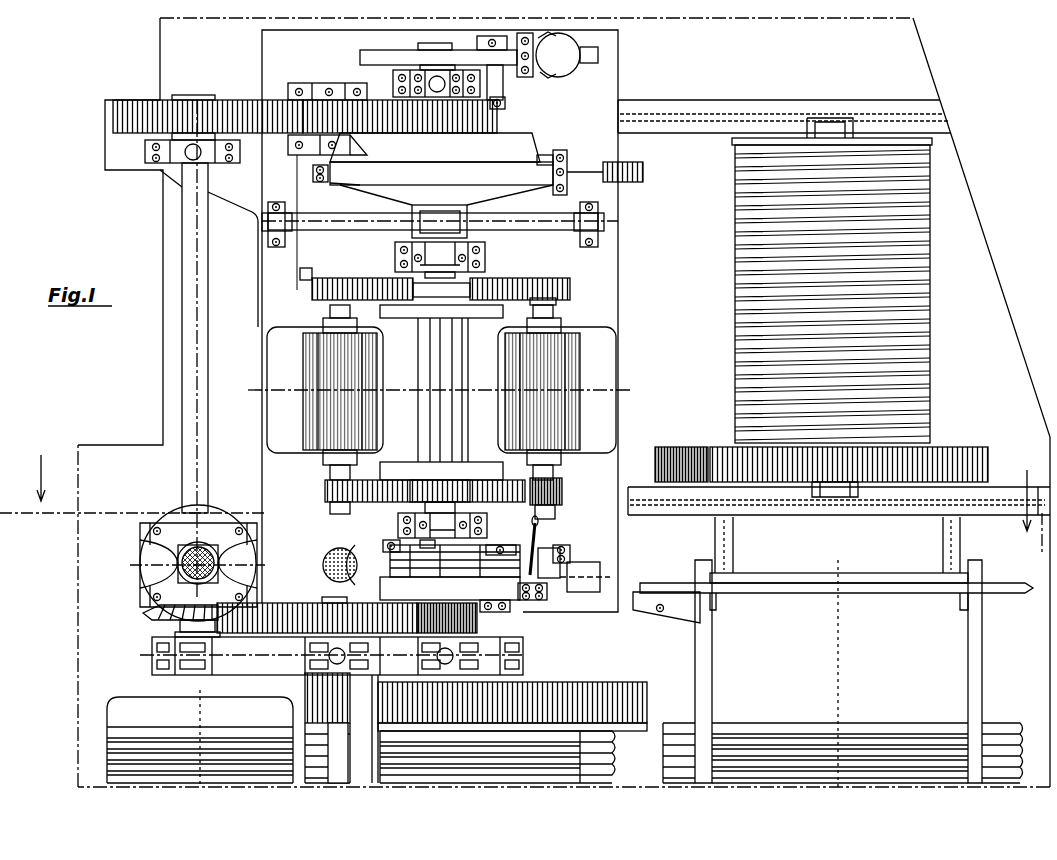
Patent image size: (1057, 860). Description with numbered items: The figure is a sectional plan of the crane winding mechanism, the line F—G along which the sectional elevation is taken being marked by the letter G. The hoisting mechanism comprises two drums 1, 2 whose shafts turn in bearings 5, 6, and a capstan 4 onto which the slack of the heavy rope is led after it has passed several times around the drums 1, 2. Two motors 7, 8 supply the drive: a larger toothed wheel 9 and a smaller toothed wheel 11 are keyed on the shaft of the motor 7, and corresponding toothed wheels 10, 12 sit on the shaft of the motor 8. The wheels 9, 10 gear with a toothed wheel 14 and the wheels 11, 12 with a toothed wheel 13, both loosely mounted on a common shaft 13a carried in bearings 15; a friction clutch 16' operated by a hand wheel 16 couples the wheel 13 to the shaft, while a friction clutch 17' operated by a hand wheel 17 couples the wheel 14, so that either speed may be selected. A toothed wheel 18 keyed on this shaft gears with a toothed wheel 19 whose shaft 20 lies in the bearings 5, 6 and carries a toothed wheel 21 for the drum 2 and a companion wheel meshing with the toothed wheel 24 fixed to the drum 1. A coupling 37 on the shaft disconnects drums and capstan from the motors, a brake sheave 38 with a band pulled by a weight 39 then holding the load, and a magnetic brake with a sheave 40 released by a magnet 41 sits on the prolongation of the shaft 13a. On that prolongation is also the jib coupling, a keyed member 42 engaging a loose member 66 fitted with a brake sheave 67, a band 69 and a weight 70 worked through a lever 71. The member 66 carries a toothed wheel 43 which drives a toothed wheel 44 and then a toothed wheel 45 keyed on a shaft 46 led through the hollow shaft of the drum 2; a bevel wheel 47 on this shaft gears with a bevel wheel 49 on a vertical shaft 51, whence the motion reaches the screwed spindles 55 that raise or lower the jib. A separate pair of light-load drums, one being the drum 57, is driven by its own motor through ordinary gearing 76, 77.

The drum 1 is at (600, 733).
The drum 2 is at (128, 705).
The capstan 4 is at (833, 650).
The bearing 5 is at (578, 750).
The bearing 6 is at (337, 656).
The motor 7 is at (557, 392).
The motor 8 is at (325, 392).
The toothed wheel 9 is at (531, 279).
The toothed wheel 10 is at (340, 275).
The toothed wheel 11 is at (562, 489).
The toothed wheel 12 is at (326, 495).
The toothed wheel 13 is at (480, 480).
The common shaft 13a is at (430, 45).
The toothed wheel 14 is at (400, 318).
The bearing 15 is at (484, 256).
The hand wheel 16 is at (381, 535).
The friction clutch 16' is at (573, 515).
The hand wheel 17 is at (430, 223).
The friction clutch 17' is at (568, 305).
The toothed wheel 18 is at (470, 615).
The toothed wheel 19 is at (290, 618).
The shaft 20 is at (348, 783).
The toothed wheel 21 is at (308, 700).
The toothed wheel 24 is at (520, 697).
The coupling 37 is at (482, 547).
The brake sheave 38 is at (503, 596).
The weight 39 is at (588, 572).
The brake sheave 40 is at (438, 68).
The magnet 41 is at (560, 66).
The coupling member 42 is at (448, 172).
The toothed wheel 43 is at (490, 116).
The toothed wheel 44 is at (312, 115).
The toothed wheel 45 is at (198, 118).
The shaft 46 is at (202, 315).
The bevel wheel 47 is at (150, 613).
The bevel wheel 49 is at (148, 582).
The vertical shaft 51 is at (182, 560).
The screwed spindle 55 is at (328, 554).
The drum 57 is at (760, 268).
The coupling member 66 is at (435, 147).
The brake sheave 67 is at (441, 196).
The brake band 69 is at (313, 172).
The weight 70 is at (612, 162).
The lever 71 is at (572, 232).
The gearing 76 is at (668, 445).
The gearing 77 is at (935, 452).
The section line G is at (523, 523).